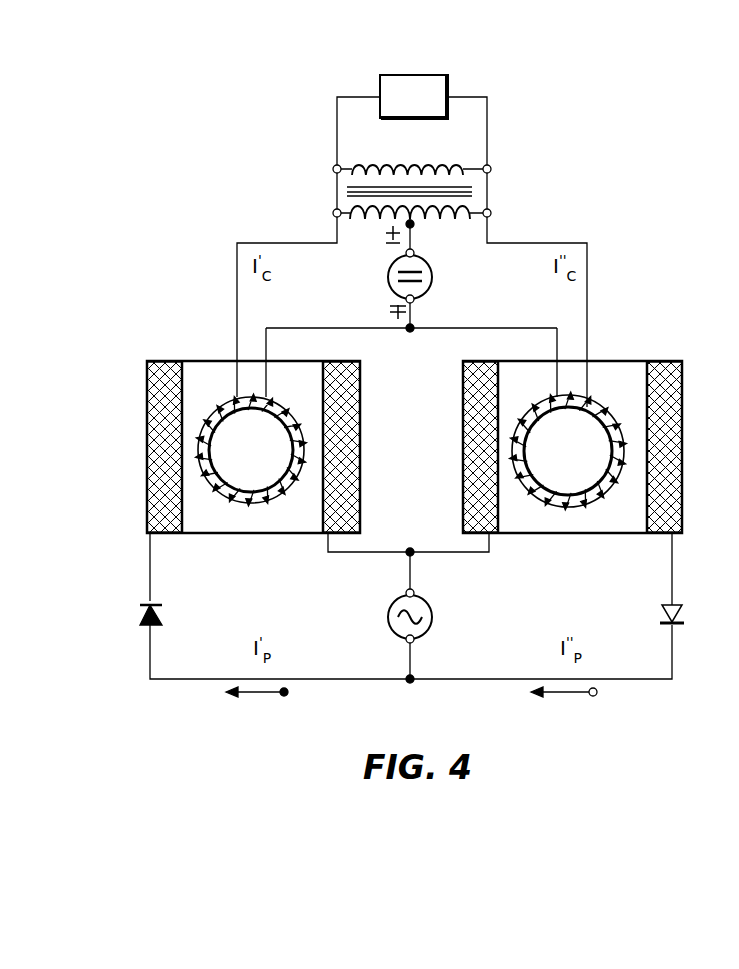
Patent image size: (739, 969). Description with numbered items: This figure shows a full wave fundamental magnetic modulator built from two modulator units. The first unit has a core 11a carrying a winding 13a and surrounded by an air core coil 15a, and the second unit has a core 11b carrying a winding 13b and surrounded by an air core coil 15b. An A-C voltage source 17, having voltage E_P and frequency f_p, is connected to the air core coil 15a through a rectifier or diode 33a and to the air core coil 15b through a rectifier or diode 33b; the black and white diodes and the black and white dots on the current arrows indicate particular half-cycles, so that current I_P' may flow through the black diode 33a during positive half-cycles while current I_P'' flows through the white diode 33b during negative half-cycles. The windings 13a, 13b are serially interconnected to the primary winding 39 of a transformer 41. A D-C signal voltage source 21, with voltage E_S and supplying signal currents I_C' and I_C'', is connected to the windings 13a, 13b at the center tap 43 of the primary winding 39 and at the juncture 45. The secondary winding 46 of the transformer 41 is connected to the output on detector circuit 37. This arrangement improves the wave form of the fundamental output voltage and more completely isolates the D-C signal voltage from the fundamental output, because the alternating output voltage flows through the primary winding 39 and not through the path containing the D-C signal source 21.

The output on detector circuit 37 is at (438, 77).
The secondary winding 46 is at (398, 167).
The transformer 41 is at (343, 189).
The primary winding 39 is at (450, 217).
The center tap 43 is at (412, 226).
The D-C signal voltage source 21 is at (432, 280).
The juncture 45 is at (412, 330).
The winding 13a is at (223, 402).
The core 11a is at (245, 407).
The air core coil 15a is at (147, 492).
The winding 13b is at (600, 402).
The core 11b is at (566, 408).
The air core coil 15b is at (684, 487).
The rectifier or diode 33a is at (140, 622).
The rectifier or diode 33b is at (684, 611).
The A-C voltage source 17 is at (428, 633).